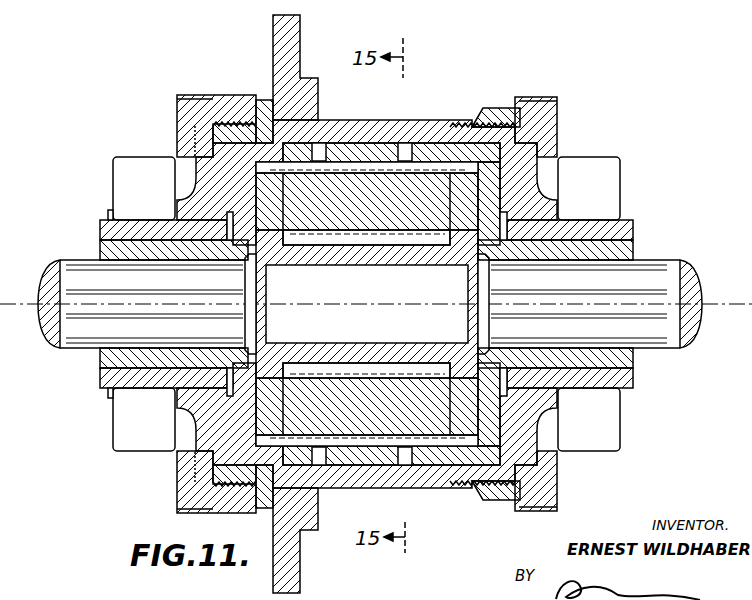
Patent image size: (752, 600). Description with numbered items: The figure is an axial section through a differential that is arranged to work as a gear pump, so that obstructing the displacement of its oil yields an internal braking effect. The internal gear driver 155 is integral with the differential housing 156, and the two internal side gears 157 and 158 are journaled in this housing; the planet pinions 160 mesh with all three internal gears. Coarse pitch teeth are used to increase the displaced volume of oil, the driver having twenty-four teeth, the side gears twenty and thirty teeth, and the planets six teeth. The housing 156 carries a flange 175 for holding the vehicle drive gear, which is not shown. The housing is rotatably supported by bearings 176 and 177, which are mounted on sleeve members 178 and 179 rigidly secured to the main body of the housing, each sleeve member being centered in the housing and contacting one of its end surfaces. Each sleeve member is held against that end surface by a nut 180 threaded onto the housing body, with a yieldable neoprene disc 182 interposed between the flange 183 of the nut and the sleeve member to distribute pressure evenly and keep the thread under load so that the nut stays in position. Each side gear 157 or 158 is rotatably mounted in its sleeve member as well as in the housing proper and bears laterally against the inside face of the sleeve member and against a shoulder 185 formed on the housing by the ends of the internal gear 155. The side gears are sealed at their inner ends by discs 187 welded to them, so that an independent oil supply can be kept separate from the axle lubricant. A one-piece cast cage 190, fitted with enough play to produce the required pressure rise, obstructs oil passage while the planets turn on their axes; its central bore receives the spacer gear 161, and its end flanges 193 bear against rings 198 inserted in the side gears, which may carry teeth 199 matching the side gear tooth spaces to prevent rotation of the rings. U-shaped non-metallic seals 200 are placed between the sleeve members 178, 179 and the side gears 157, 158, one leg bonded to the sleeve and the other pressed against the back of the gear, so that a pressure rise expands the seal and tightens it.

The internal gear driver 155 is at (407, 157).
The differential housing 156 is at (374, 131).
The internal side gear 157 is at (290, 157).
The internal side gear 158 is at (457, 168).
The planet pinion 160 is at (428, 203).
The spacer gear 161 is at (335, 257).
The flange 175 is at (290, 40).
The bearing 176 is at (134, 166).
The bearing 177 is at (592, 172).
The sleeve member 178 is at (108, 379).
The sleeve member 179 is at (634, 233).
The nut 180 is at (192, 113).
The disc 182 is at (196, 470).
The flange of nut 183 is at (183, 143).
The shoulder 185 is at (317, 145).
The disc 187 is at (256, 325).
The cage 190 is at (280, 403).
The end flange 193 is at (465, 410).
The ring 198 is at (262, 153).
The teeth 199 is at (260, 160).
The seal 200 is at (228, 222).